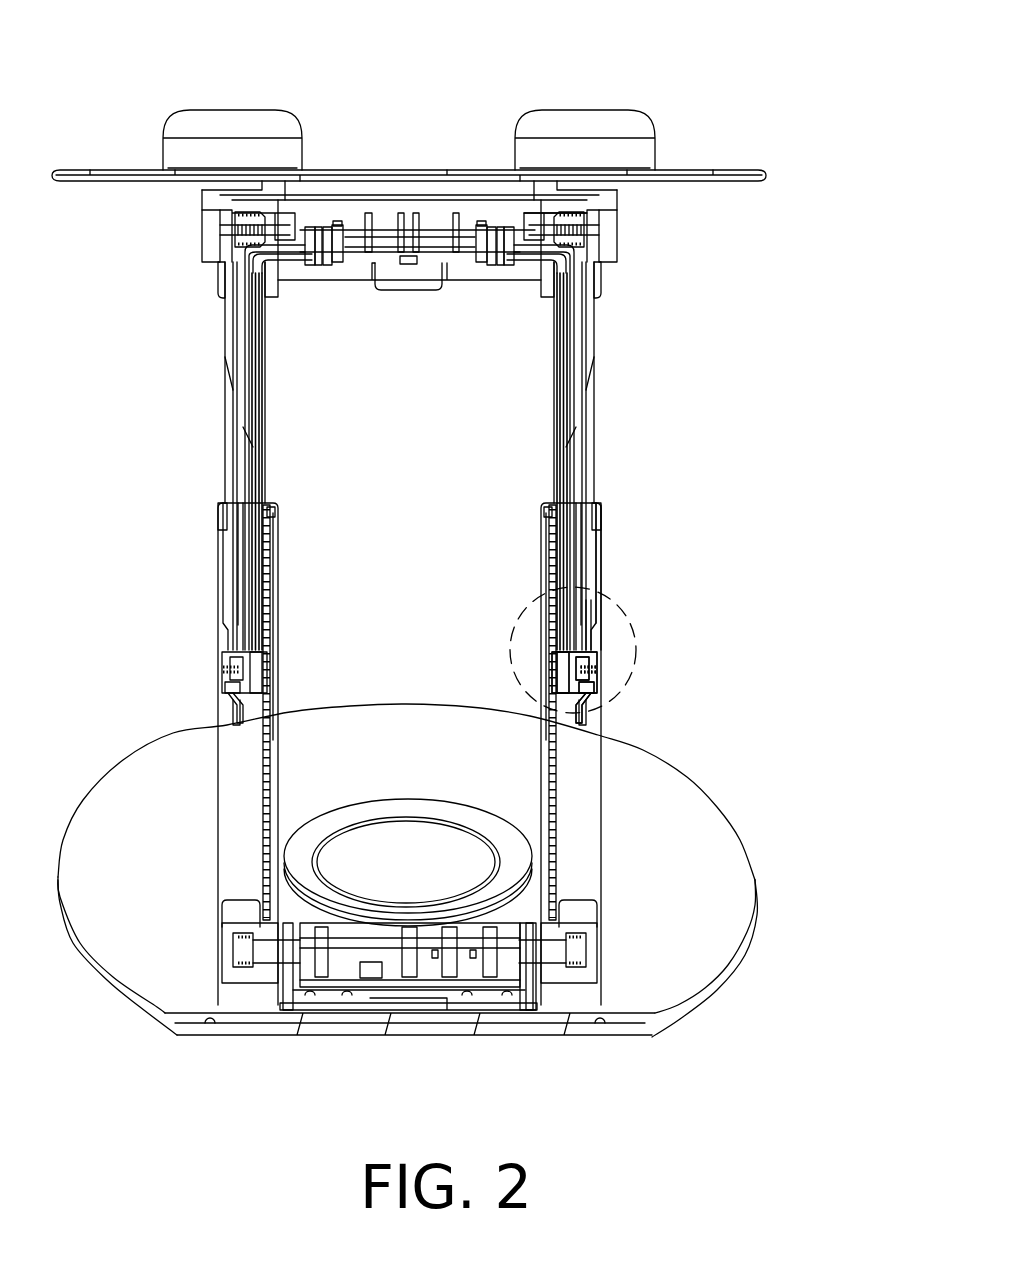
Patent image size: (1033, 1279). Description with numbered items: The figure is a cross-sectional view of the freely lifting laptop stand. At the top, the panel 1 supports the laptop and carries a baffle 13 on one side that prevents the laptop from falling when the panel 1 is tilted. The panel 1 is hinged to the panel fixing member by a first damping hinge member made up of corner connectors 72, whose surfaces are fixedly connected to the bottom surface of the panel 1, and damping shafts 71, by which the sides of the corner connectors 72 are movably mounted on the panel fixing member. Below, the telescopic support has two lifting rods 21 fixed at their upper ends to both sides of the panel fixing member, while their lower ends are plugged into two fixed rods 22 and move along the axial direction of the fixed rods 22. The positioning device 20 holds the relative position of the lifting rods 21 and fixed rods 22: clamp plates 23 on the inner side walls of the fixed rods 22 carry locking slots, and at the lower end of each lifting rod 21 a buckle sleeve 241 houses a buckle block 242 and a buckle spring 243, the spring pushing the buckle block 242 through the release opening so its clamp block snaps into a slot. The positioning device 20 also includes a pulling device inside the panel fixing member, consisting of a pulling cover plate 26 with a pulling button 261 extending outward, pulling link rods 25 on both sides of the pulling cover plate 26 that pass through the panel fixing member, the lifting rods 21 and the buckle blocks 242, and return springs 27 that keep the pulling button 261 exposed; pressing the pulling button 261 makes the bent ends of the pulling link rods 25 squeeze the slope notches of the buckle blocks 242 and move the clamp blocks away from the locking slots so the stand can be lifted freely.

The panel 1 is at (418, 165).
The baffle 13 is at (585, 138).
The positioning device 20 is at (489, 595).
The lifting rods 21 is at (598, 425).
The fixed rods 22 is at (595, 799).
The clamp plates 23 is at (557, 756).
The buckle sleeve 241 is at (600, 595).
The buckle block 242 is at (572, 683).
The buckle spring 243 is at (600, 658).
The pulling link rods 25 is at (602, 258).
The pulling cover plate 26 is at (452, 263).
The pulling button 261 is at (411, 280).
The return springs 27 is at (616, 225).
The damping shafts 71 is at (215, 233).
The corner connectors 72 is at (213, 197).